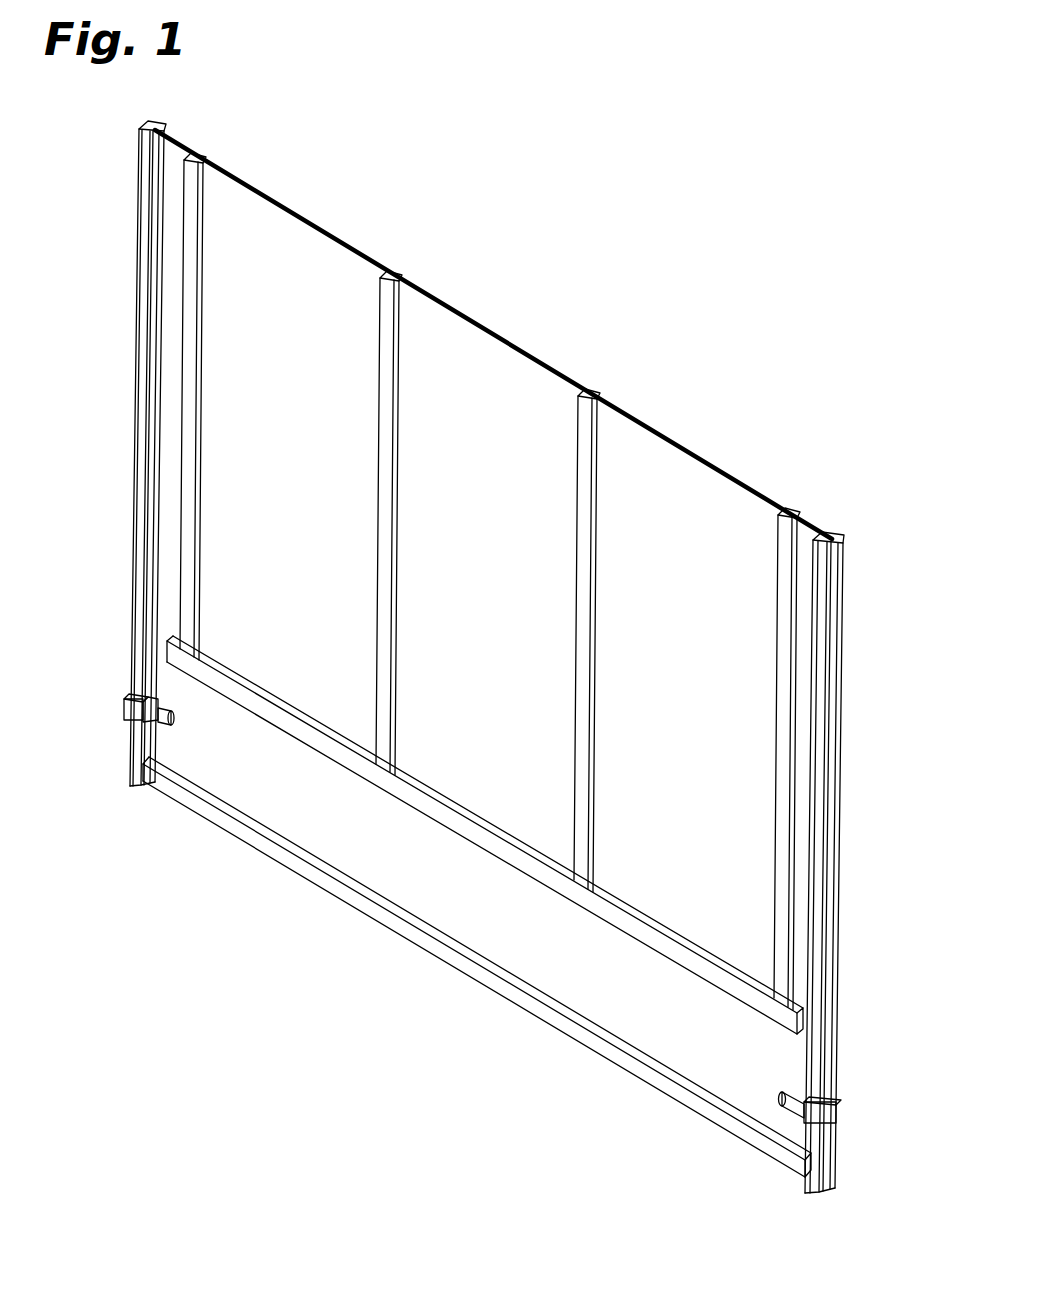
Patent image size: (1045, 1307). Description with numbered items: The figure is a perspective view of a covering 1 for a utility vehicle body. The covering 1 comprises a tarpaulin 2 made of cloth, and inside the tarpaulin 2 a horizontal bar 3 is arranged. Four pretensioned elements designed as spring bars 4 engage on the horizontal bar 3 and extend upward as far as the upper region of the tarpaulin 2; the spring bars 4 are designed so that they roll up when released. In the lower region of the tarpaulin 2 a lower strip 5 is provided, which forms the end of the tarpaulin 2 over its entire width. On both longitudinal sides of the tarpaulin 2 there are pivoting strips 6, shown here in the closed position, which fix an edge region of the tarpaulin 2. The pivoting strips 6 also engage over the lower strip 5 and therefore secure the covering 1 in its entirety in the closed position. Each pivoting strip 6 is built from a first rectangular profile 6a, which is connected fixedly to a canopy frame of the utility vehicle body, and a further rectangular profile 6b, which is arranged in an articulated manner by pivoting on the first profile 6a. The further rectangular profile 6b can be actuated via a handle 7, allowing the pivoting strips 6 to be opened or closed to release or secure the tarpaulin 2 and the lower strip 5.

The covering 1 is at (776, 395).
The tarpaulin 2 is at (658, 1026).
The horizontal bar 3 is at (637, 925).
The spring bars 4 is at (188, 431).
The lower strip 5 is at (424, 942).
The pivoting strips 6 is at (118, 246).
The first rectangular profile 6a is at (839, 564).
The further rectangular profile 6b is at (820, 682).
The handle 7 is at (173, 713).